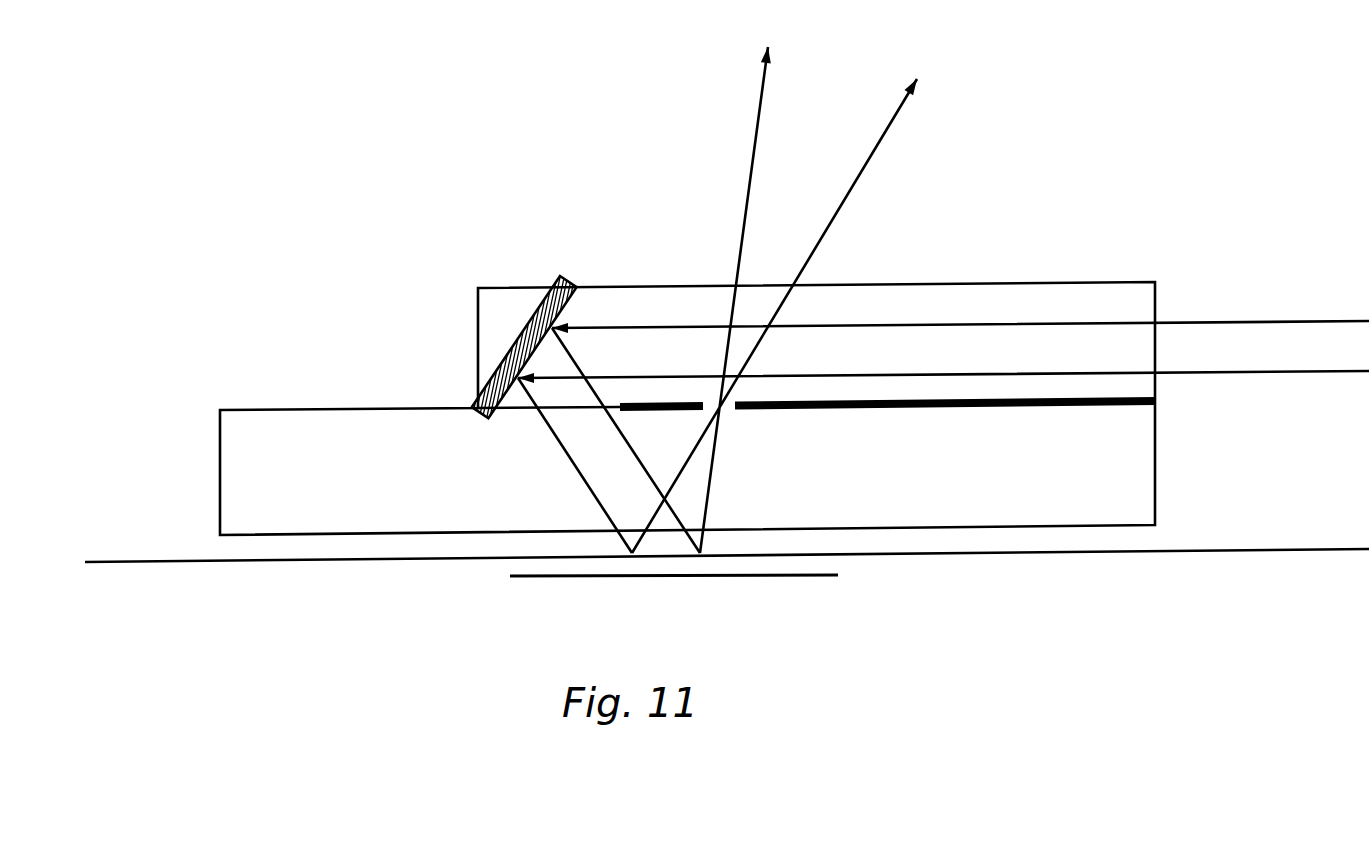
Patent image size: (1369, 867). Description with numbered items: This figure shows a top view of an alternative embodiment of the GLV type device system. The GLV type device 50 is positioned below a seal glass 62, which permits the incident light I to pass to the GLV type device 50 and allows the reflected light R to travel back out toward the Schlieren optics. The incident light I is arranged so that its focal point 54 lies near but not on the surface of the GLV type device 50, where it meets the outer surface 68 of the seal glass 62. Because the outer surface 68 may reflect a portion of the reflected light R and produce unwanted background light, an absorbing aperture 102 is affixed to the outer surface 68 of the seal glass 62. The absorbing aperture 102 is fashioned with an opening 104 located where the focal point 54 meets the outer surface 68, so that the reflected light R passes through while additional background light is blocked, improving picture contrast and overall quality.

The GLV type device 50 is at (740, 582).
The focal point 54 is at (727, 410).
The seal glass 62 is at (1160, 470).
The outer surface 68 is at (1160, 407).
The absorbing aperture 102 is at (960, 398).
The opening 104 is at (708, 392).